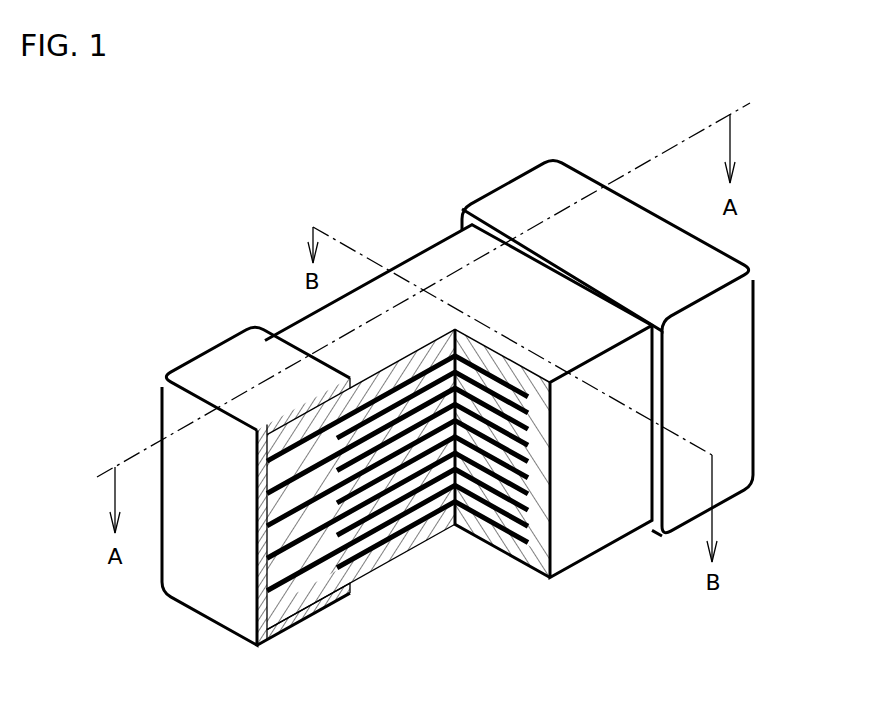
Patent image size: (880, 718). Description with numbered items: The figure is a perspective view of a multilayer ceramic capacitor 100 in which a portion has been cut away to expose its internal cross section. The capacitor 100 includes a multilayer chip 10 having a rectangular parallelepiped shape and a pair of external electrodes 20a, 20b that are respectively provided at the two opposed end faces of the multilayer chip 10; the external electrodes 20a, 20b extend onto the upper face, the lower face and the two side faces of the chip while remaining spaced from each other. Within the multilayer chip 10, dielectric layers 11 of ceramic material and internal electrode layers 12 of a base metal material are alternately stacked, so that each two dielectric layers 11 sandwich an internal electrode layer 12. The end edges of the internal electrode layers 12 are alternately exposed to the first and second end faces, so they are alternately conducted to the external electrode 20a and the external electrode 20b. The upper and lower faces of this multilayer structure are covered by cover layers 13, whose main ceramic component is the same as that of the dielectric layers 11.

The multilayer ceramic capacitor 100 is at (808, 90).
The multilayer chip 10 is at (298, 320).
The dielectric layer 11 is at (403, 514).
The internal electrode layer 12 is at (443, 522).
The cover layer 13 is at (425, 268).
The external electrode 20a is at (190, 363).
The external electrode 20b is at (512, 197).